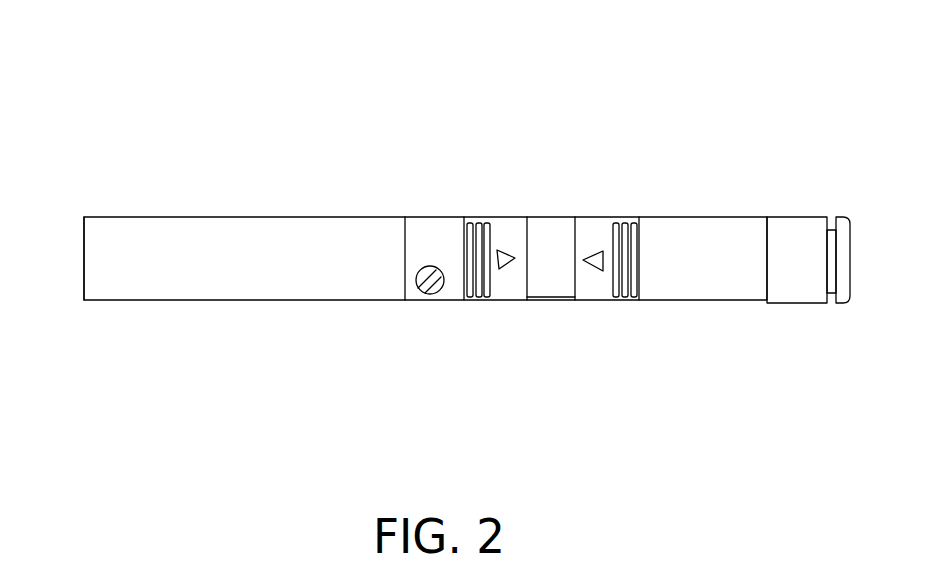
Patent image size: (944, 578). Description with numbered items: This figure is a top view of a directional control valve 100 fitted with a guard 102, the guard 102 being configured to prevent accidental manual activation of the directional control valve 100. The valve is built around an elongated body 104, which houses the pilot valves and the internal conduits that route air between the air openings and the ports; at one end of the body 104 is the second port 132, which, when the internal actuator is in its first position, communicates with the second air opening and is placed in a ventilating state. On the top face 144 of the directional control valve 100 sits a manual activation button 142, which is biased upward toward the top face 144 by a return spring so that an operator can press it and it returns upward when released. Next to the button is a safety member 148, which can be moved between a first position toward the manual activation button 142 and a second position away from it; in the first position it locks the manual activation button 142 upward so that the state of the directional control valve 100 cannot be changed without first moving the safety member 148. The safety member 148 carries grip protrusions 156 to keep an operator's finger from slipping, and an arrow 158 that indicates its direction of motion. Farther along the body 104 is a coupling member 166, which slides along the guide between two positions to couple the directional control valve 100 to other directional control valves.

The directional control valve 100 is at (116, 59).
The guard 102 is at (549, 238).
The body 104 is at (84, 274).
The second port 132 is at (803, 232).
The manual activation button 142 is at (431, 294).
The top face 144 is at (323, 245).
The safety member 148 is at (497, 296).
The grip protrusions 156 is at (473, 230).
The arrow 158 is at (506, 262).
The coupling member 166 is at (603, 232).